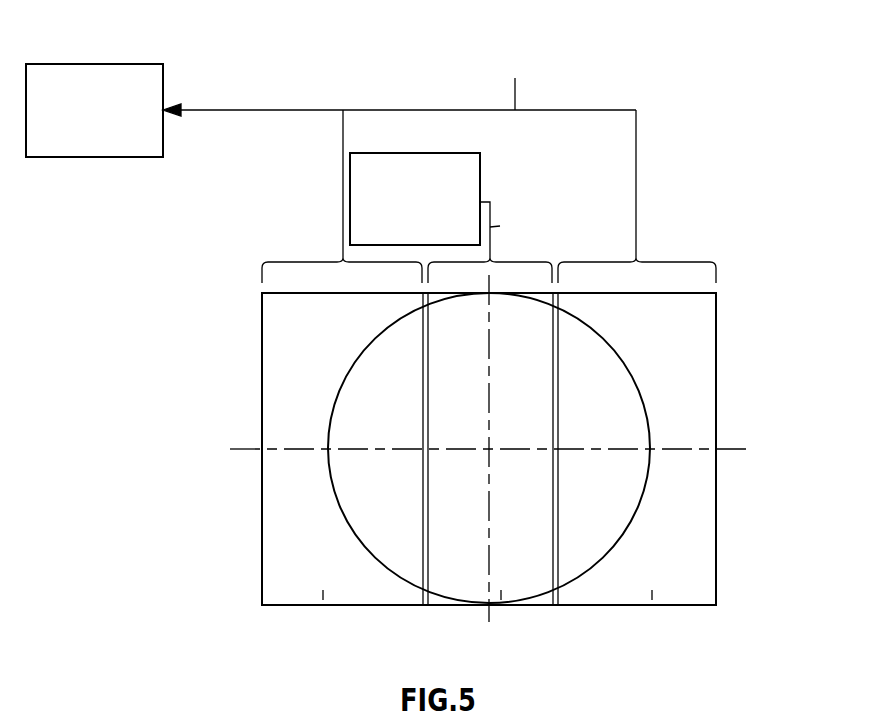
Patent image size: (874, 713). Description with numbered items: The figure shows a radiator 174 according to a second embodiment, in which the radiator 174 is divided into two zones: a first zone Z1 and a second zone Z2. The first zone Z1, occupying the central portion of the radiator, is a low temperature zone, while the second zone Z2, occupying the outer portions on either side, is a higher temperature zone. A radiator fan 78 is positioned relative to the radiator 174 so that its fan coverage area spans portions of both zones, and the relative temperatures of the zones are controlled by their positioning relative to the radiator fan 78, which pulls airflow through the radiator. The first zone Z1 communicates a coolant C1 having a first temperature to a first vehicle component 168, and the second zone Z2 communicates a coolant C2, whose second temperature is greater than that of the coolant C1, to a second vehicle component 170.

The radiator fan 78 is at (617, 352).
The first vehicle component 168 is at (480, 175).
The second vehicle component 170 is at (126, 64).
The radiator 174 is at (761, 372).
The coolant C1 is at (490, 227).
The coolant C2 is at (515, 78).
The first zone Z1 is at (501, 590).
The second zone Z2 is at (323, 590).